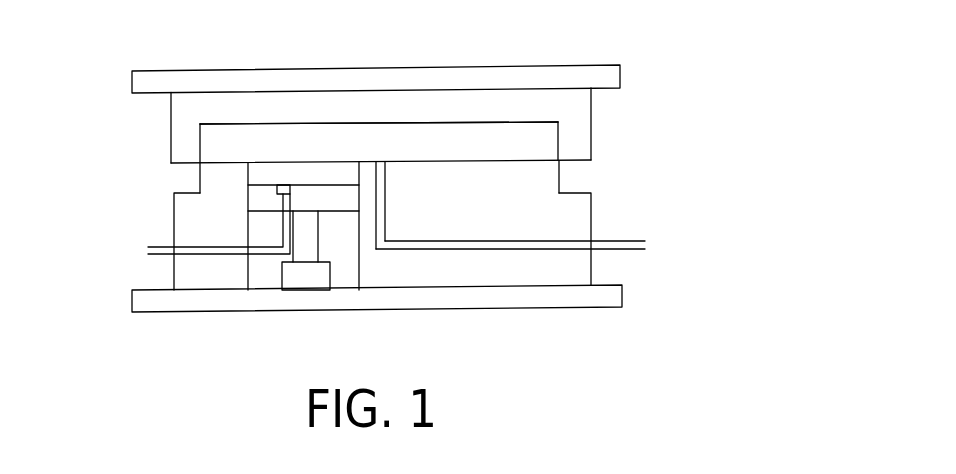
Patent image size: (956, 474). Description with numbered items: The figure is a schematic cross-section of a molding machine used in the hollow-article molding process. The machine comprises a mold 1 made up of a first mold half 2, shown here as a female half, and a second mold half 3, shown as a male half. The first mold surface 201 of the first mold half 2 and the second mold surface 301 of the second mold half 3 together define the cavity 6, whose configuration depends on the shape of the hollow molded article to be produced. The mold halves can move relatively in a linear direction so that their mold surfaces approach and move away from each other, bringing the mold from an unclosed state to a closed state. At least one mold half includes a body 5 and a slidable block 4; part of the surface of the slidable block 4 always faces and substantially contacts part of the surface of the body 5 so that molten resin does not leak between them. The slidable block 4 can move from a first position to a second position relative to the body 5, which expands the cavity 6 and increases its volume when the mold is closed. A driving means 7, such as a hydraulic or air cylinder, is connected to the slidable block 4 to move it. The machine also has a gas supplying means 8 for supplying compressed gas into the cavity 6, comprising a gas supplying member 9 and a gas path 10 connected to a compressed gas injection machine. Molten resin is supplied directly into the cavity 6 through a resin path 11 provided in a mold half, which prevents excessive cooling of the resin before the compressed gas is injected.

The mold 1 is at (170, 181).
The first mold half 2 is at (568, 111).
The second mold half 3 is at (562, 180).
The slidable block 4 is at (326, 199).
The body 5 is at (187, 275).
The cavity 6 is at (540, 142).
The driving means 7 is at (306, 275).
The gas supplying means 8 is at (280, 236).
The gas supplying member 9 is at (283, 191).
The gas path 10 is at (213, 248).
The resin path 11 is at (563, 249).
The first mold surface 201 is at (509, 122).
The second mold surface 301 is at (440, 160).